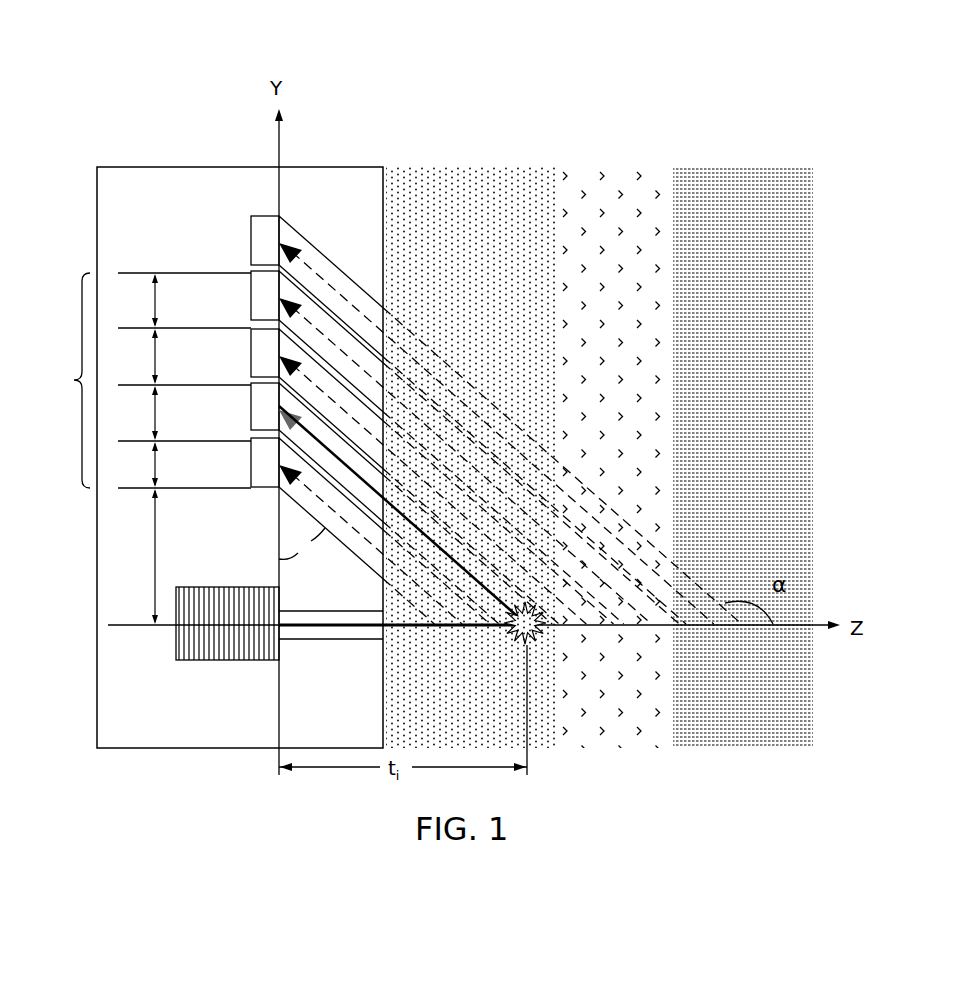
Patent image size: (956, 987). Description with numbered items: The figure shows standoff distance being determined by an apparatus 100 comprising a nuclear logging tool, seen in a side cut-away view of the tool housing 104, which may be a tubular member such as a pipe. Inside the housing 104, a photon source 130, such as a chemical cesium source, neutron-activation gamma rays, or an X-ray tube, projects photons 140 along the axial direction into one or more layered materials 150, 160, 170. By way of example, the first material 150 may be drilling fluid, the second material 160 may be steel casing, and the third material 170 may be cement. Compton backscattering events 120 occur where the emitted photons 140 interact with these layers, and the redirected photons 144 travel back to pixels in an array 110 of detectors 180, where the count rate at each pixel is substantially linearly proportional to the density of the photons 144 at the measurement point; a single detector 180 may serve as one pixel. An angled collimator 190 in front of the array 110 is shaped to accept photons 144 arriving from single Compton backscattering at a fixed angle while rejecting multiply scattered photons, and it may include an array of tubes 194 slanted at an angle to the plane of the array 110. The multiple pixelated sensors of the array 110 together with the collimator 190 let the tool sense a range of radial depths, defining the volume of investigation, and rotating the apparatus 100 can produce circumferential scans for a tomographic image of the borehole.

The apparatus 100 is at (733, 47).
The tool housing 104 is at (123, 160).
The array 110 is at (144, 448).
The Compton backscattering events 120 is at (542, 633).
The photon source 130 is at (218, 660).
The photons 140 is at (417, 627).
The redirected photons 144 is at (440, 547).
The first material 150 is at (463, 162).
The second material 160 is at (617, 162).
The third material 170 is at (757, 162).
The detectors 180 is at (251, 463).
The angled collimator 190 is at (328, 258).
The array of tubes 194 is at (360, 558).